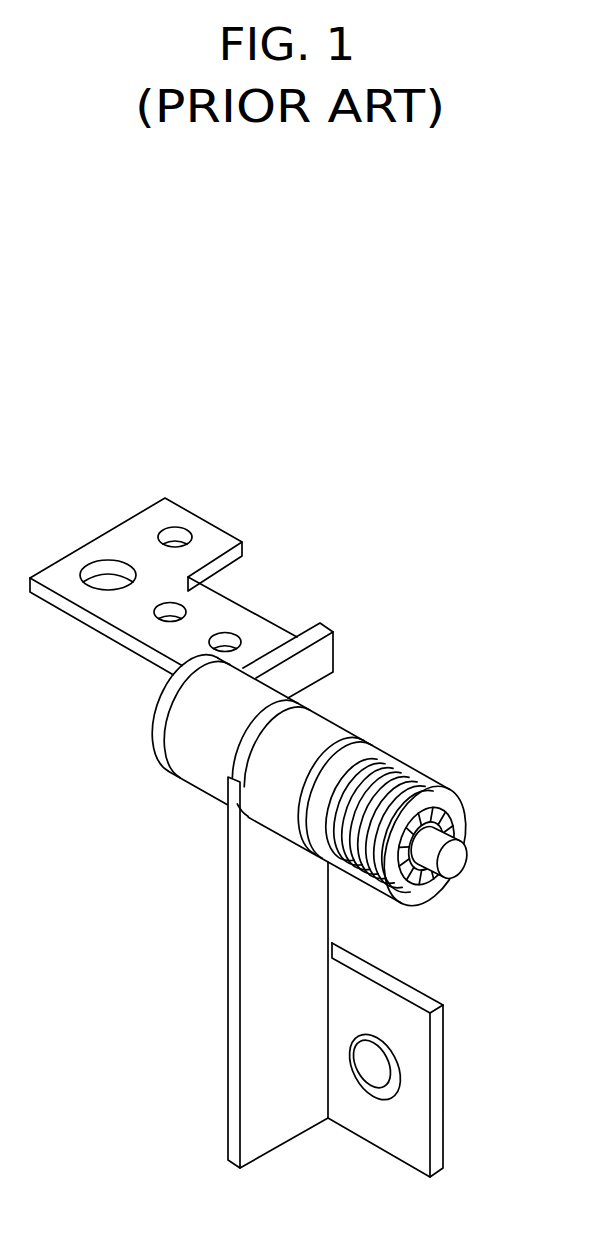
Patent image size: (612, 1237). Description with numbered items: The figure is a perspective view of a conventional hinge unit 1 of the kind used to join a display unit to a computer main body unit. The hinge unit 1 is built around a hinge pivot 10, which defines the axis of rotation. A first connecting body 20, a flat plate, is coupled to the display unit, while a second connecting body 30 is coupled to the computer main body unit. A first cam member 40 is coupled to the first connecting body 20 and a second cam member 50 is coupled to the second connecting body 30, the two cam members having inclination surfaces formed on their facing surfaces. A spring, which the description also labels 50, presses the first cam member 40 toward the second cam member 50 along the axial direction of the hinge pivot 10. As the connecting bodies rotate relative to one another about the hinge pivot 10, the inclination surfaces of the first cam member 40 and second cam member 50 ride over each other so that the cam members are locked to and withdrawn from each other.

The hinge unit 1 is at (480, 445).
The hinge pivot 10 is at (457, 868).
The first connecting body 20 is at (127, 525).
The second connecting body 30 is at (280, 1135).
The first cam member 40 is at (373, 757).
The second cam member 50 is at (332, 730).